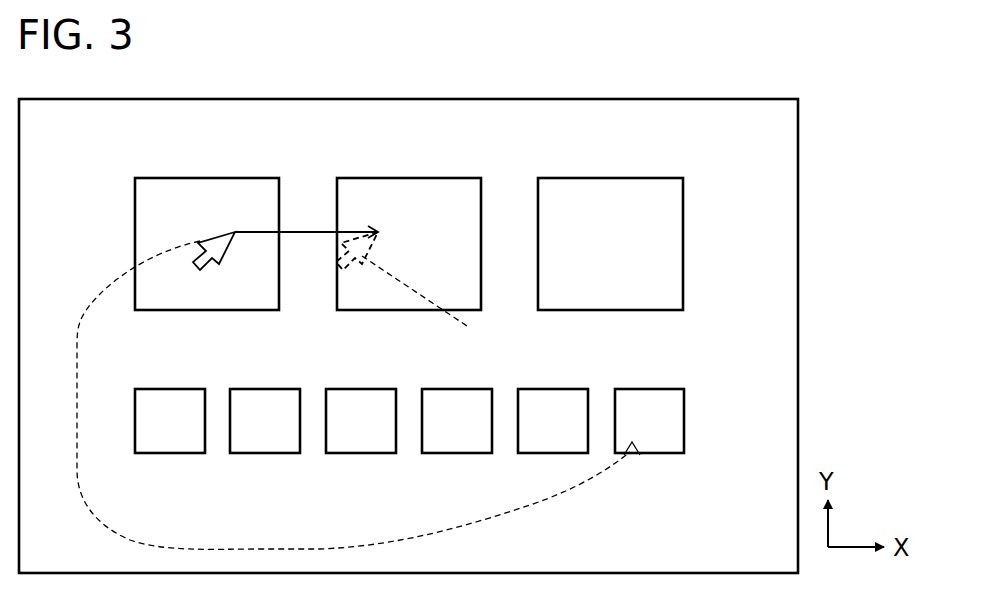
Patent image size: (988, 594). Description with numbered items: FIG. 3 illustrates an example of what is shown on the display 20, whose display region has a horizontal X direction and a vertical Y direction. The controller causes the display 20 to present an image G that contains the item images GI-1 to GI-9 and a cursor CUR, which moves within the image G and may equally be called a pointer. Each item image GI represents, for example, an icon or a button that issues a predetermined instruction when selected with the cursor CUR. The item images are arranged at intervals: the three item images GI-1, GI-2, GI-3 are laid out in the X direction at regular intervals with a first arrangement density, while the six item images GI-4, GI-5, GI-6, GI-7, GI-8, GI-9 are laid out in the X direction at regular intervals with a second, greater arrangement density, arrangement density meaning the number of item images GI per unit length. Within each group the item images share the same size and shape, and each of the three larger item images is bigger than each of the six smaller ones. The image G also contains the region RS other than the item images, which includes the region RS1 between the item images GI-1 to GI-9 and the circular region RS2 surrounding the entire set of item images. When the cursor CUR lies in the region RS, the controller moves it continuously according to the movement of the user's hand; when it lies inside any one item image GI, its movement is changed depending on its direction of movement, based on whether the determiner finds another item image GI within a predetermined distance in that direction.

The display 20 is at (800, 128).
The image G is at (800, 166).
The item image GI is at (258, 177).
The item image GI-1 is at (200, 178).
The item image GI-2 is at (407, 178).
The item image GI-3 is at (608, 178).
The item image GI-4 is at (160, 454).
The item image GI-5 is at (258, 454).
The item image GI-6 is at (355, 454).
The item image GI-7 is at (451, 454).
The item image GI-8 is at (540, 454).
The item image GI-9 is at (681, 473).
The cursor CUR is at (201, 242).
The region RS1 is at (632, 341).
The circular region RS2 is at (740, 375).
The region RS is at (873, 310).